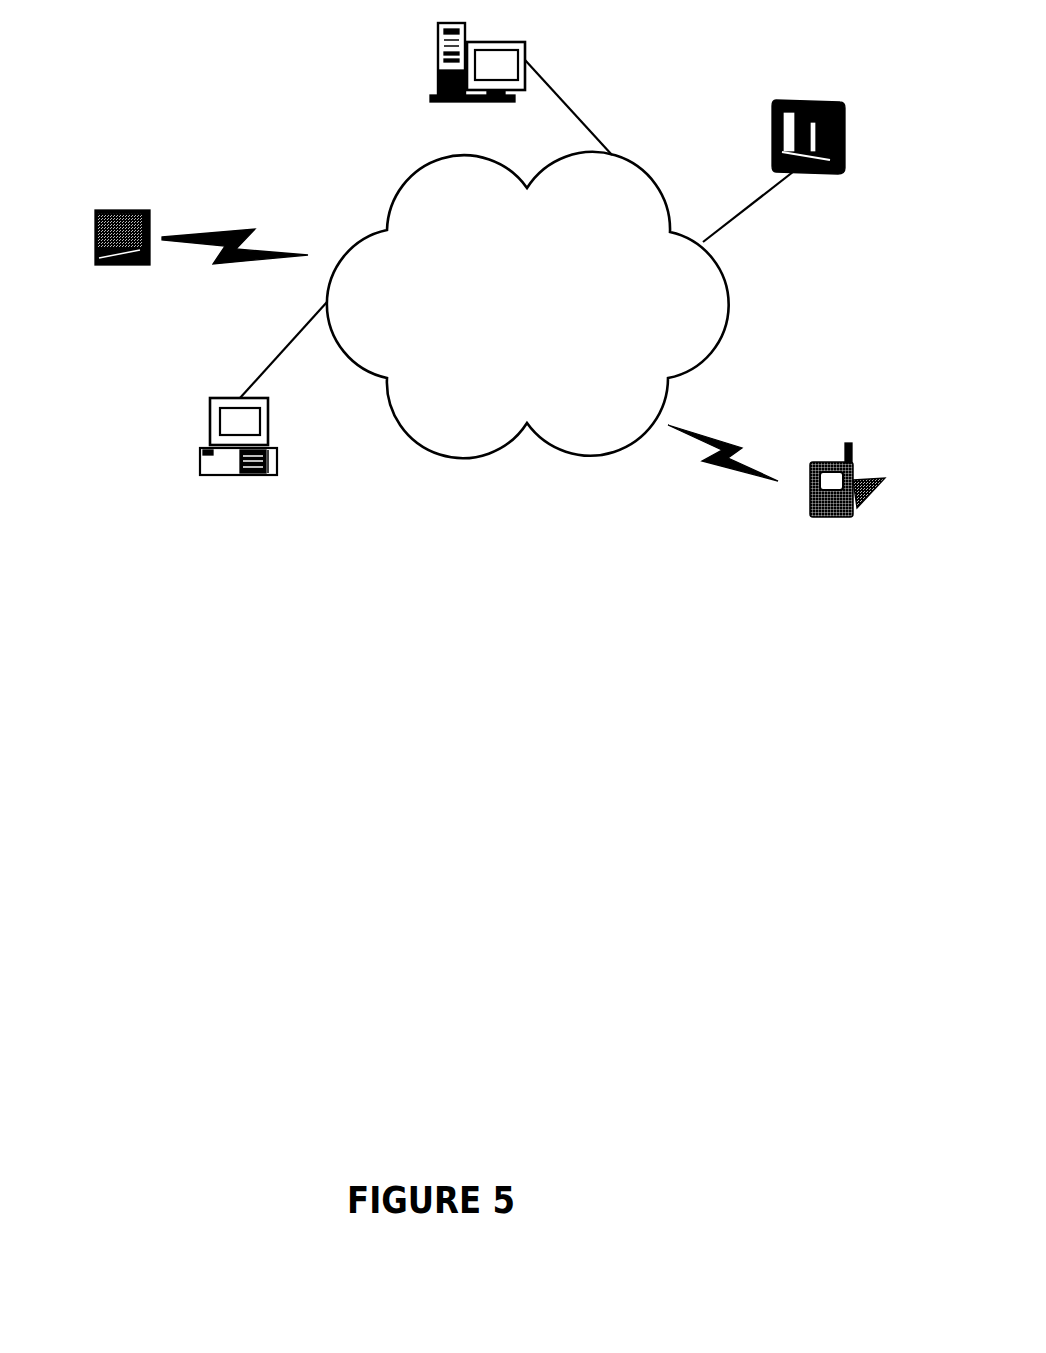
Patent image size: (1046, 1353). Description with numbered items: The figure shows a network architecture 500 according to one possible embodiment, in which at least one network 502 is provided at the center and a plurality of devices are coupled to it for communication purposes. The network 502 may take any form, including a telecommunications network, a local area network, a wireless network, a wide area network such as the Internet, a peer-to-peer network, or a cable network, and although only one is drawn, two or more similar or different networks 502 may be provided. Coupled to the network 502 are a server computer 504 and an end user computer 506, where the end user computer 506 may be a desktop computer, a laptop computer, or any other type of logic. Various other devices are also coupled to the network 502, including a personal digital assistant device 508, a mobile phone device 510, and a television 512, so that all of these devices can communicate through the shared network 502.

The network architecture 500 is at (437, 757).
The network 502 is at (585, 457).
The server computer 504 is at (438, 62).
The end user computer 506 is at (200, 455).
The personal digital assistant (PDA) device 508 is at (122, 210).
The mobile phone device 510 is at (810, 462).
The television 512 is at (790, 92).